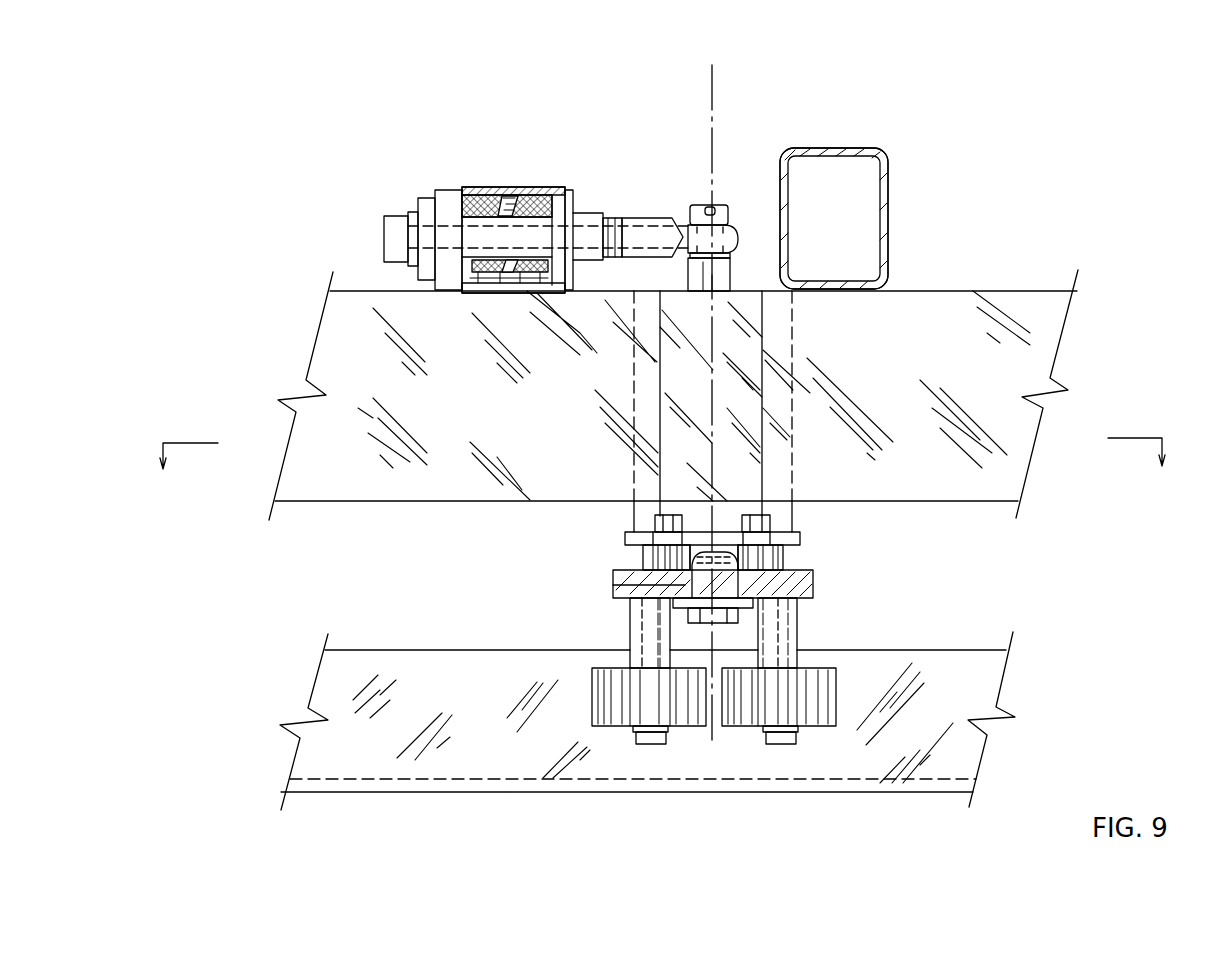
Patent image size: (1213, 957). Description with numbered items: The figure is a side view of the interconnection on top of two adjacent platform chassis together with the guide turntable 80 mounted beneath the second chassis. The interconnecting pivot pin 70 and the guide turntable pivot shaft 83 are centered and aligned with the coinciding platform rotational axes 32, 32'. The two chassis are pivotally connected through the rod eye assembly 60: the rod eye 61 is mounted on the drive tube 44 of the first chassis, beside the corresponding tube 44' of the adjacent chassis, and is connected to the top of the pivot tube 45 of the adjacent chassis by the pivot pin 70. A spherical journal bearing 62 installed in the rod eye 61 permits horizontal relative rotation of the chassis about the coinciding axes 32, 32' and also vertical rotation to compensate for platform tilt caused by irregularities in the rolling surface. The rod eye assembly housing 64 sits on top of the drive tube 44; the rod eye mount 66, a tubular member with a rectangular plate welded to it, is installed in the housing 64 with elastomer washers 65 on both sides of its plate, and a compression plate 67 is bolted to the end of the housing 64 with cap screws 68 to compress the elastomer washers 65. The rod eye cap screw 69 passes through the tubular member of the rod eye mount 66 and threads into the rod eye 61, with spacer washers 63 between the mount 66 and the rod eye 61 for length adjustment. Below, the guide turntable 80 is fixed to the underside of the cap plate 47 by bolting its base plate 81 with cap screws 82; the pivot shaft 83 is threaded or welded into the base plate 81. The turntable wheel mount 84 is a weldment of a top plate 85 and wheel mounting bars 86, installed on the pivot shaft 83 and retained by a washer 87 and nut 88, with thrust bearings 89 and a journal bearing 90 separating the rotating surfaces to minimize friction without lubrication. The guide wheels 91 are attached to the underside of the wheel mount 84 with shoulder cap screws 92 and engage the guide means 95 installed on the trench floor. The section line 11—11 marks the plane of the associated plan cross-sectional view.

The section line 11— 11 is at (662, 458).
The platform rotational axis 32 is at (800, 163).
The platform rotational axis 32' is at (834, 218).
The drive tube 44 is at (456, 373).
The adjacent board 44' is at (937, 394).
The pivot tube 45 is at (792, 518).
The cap plate 47 is at (803, 540).
The rod eye assembly 60 is at (459, 165).
The rod eye 61 is at (635, 218).
The spherical journal bearing 62 is at (683, 218).
The spacer washers 63 is at (618, 218).
The rod eye assembly housing 64 is at (520, 188).
The elastomer washers 65 is at (458, 190).
The rod eye mount 66 is at (463, 187).
The compression plate 67 is at (435, 190).
The cap screws 68 is at (418, 200).
The rod eye cap screw 69 is at (384, 232).
The interconnecting pivot pin 70 is at (703, 207).
The guide turntable 80 is at (462, 584).
The base plate 81 is at (625, 540).
The cap screws 82 is at (655, 522).
The pivot shaft 83 is at (650, 560).
The turntable wheel mount 84 is at (841, 614).
The top plate 85 is at (815, 585).
The wheel mounting bars 86 is at (803, 633).
The washer 87 is at (670, 603).
The nut 88 is at (688, 617).
The thrust bearings 89 is at (790, 562).
The journal bearing 90 is at (680, 589).
The guide wheels 91 is at (838, 698).
The shoulder cap screws 92 is at (777, 745).
The guide means 95 is at (428, 792).